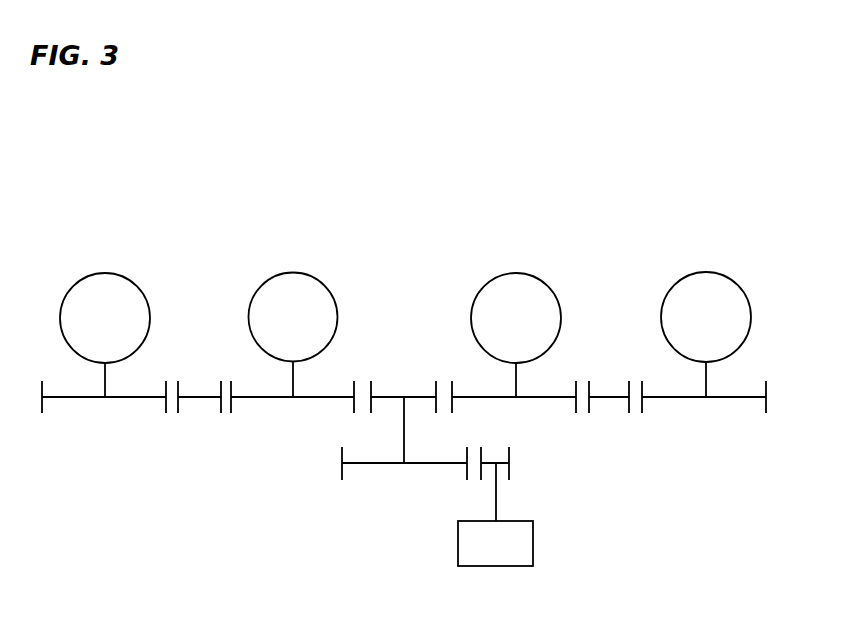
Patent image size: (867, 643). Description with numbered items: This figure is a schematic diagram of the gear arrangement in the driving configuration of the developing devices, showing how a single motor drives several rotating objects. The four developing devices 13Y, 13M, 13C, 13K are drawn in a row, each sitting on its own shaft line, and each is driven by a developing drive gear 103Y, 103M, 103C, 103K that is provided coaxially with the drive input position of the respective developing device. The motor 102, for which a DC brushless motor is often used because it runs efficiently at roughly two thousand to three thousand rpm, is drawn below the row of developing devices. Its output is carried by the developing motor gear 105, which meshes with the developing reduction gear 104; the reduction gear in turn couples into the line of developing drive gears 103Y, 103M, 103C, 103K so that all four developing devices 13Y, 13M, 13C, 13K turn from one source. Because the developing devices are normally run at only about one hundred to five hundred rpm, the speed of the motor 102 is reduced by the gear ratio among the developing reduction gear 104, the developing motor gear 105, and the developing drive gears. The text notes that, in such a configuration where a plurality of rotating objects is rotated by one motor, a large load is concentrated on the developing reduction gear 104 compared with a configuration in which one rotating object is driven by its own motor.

The developing device 13Y is at (106, 273).
The developing device 13M is at (293, 273).
The developing device 13C is at (529, 273).
The developing device 13K is at (706, 273).
The developing drive gear 103Y is at (80, 397).
The developing drive gear 103M is at (272, 397).
The developing drive gear 103C is at (545, 397).
The developing drive gear 103K is at (725, 397).
The developing reduction gear 104 is at (375, 463).
The developing motor gear 105 is at (503, 465).
The motor 102 is at (487, 566).